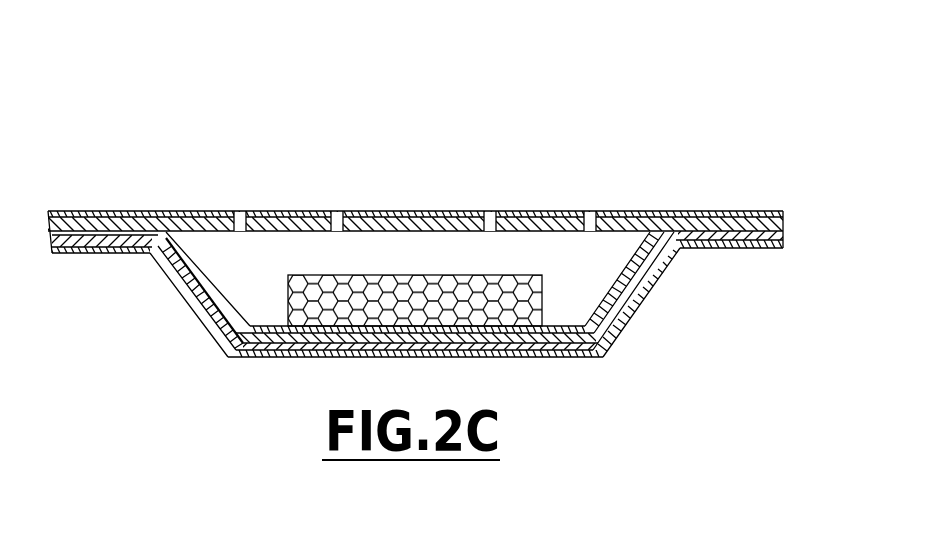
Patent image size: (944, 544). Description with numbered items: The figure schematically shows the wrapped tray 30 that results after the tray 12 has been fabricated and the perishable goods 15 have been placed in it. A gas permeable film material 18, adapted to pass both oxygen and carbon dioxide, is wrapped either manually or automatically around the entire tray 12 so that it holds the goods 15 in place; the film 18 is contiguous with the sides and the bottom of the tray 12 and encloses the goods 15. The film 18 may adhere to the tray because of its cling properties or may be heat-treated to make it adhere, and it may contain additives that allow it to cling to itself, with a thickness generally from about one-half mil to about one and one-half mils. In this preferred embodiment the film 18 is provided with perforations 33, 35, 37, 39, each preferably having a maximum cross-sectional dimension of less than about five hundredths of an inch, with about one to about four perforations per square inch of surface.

The wrapped tray 30 is at (184, 146).
The gas permeable film material 18 is at (721, 210).
The perforation 39 is at (245, 211).
The perforation 37 is at (335, 211).
The perforation 35 is at (512, 163).
The perforation 33 is at (589, 210).
The tray 12 is at (214, 285).
The goods 15 is at (545, 285).